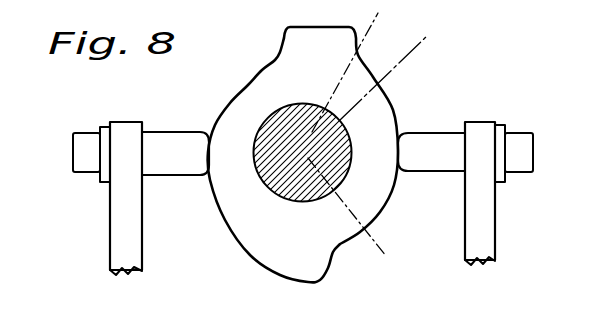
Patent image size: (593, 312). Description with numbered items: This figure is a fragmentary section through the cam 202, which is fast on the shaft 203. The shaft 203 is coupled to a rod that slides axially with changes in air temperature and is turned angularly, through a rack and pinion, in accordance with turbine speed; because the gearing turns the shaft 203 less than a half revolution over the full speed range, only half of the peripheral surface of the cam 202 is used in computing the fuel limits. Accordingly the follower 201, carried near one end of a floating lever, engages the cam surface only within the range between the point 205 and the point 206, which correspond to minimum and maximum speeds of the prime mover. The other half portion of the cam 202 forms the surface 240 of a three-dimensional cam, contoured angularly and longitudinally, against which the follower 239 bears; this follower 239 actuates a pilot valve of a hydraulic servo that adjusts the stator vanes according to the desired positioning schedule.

The follower 201 is at (435, 141).
The cam 202 is at (383, 201).
The shaft 203 is at (288, 199).
The point 205 is at (380, 239).
The point 206 is at (370, 72).
The follower 239 is at (180, 143).
The surface 240 is at (227, 238).